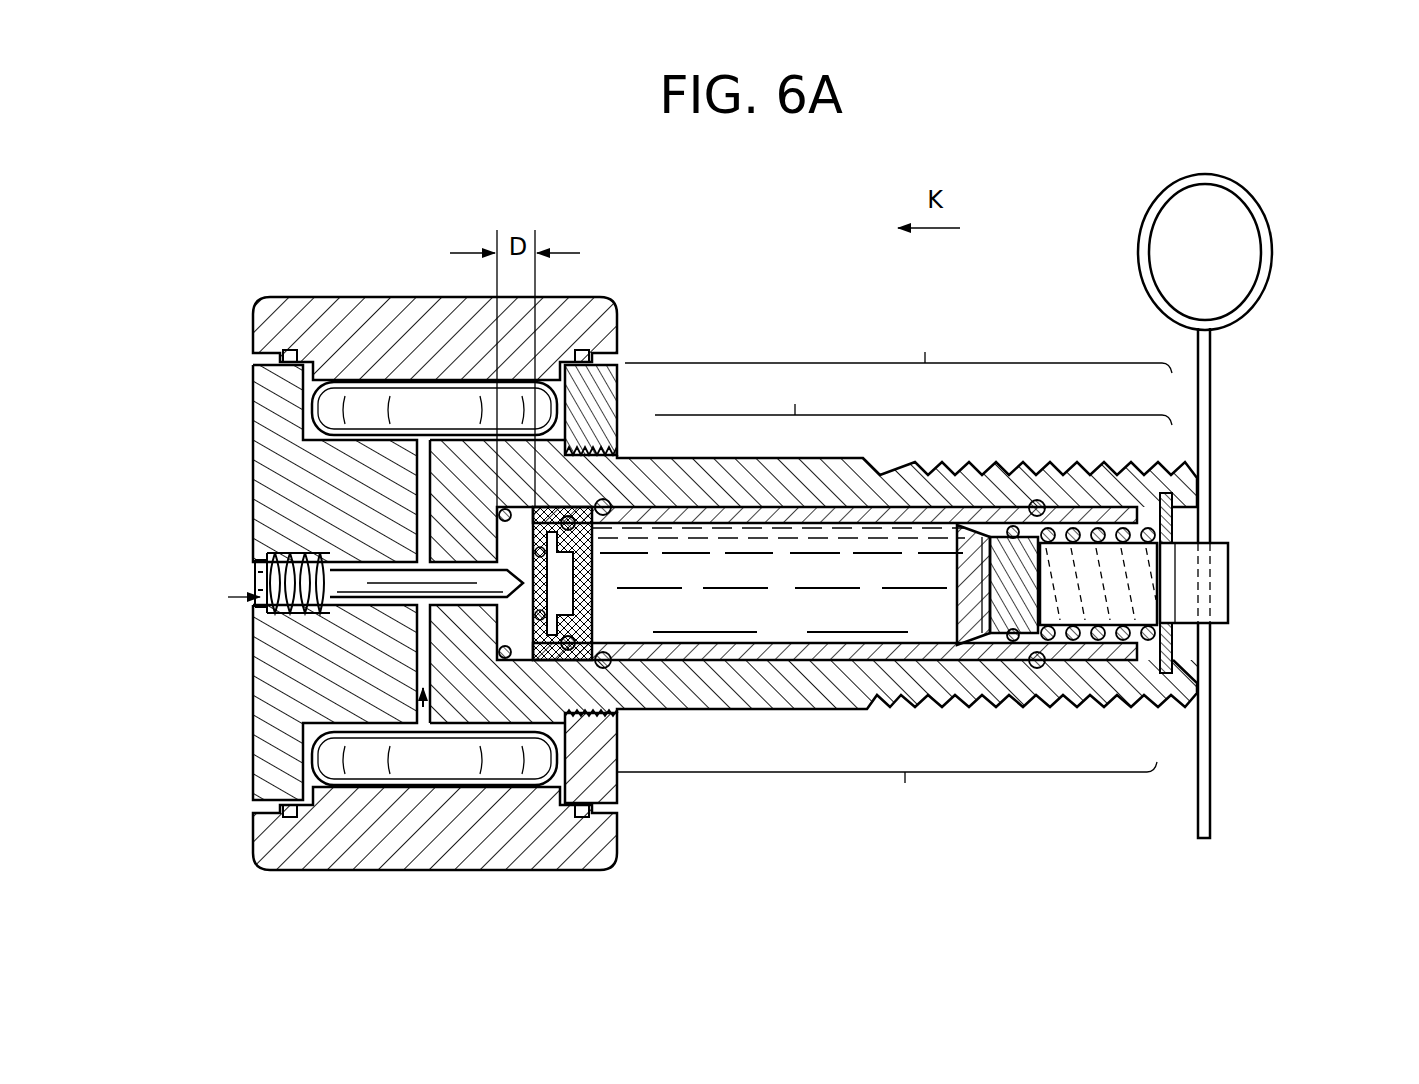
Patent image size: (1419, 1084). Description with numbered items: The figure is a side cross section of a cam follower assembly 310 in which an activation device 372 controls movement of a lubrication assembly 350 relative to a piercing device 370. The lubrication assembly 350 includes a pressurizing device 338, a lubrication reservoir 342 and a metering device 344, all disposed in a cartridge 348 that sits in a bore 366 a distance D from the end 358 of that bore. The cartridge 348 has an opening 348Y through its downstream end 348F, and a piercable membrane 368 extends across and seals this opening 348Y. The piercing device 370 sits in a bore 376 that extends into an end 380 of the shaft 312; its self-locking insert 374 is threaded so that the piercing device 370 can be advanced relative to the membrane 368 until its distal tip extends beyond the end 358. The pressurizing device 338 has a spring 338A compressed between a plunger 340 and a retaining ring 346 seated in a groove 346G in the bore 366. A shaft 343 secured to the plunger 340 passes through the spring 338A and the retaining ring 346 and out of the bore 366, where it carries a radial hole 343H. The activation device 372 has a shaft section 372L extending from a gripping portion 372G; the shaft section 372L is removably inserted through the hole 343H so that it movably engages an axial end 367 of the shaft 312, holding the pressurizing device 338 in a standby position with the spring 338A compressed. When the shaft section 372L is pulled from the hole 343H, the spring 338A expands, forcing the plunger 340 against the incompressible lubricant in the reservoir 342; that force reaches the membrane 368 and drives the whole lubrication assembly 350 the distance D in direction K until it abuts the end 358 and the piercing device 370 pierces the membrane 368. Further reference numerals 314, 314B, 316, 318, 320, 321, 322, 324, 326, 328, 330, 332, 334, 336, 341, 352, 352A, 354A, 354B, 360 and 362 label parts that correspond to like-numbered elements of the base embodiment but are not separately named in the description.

The cam follower assembly 310 is at (735, 315).
The shaft 312 is at (300, 400).
The valve body 314 is at (262, 480).
The body wall top 314B is at (300, 392).
The housing section 316 is at (913, 399).
The lower groove 318 is at (310, 758).
The valve block 320 is at (620, 708).
The ring inner portion 321 is at (610, 420).
The housing portion 322 is at (898, 347).
The end cap 324 is at (325, 308).
The cap outer surface 326 is at (430, 300).
The cap inner surface 328 is at (455, 380).
The body shoulder 330 is at (302, 445).
The O-ring 332 is at (385, 390).
The passage 334 is at (340, 600).
The body lower face 336 is at (303, 723).
The pressurizing device 338 is at (1080, 655).
The spring 338A is at (1116, 596).
The plunger 340 is at (1021, 612).
The piston seal lip 341 is at (930, 528).
The lubrication reservoir 342 is at (879, 700).
The shaft 343 is at (1230, 617).
The hole 343H is at (1212, 593).
The metering device 344 is at (603, 566).
The retaining ring 346 is at (1176, 522).
The groove 346G is at (1195, 692).
The cartridge 348 is at (840, 508).
The downstream end 348F is at (487, 667).
The opening 348Y is at (538, 575).
The lubrication assembly 350 is at (887, 789).
The retaining ring 352 is at (612, 390).
The ring outer portion 352A is at (553, 370).
The cap notch 354A is at (592, 358).
The cap notch 354B is at (300, 350).
The end 358 is at (503, 658).
The housing 360 is at (773, 457).
The housing mouth 362 is at (1180, 700).
The bore 366 is at (1191, 538).
The axial end 367 is at (1198, 670).
The piercable membrane 368 is at (663, 690).
The piercing device 370 is at (370, 586).
The activation device 372 is at (1258, 166).
The gripping portion 372G is at (1140, 228).
The shaft section 372L is at (1213, 388).
The self-locking insert 374 is at (300, 583).
The bore 376 is at (217, 605).
The end 380 is at (262, 560).